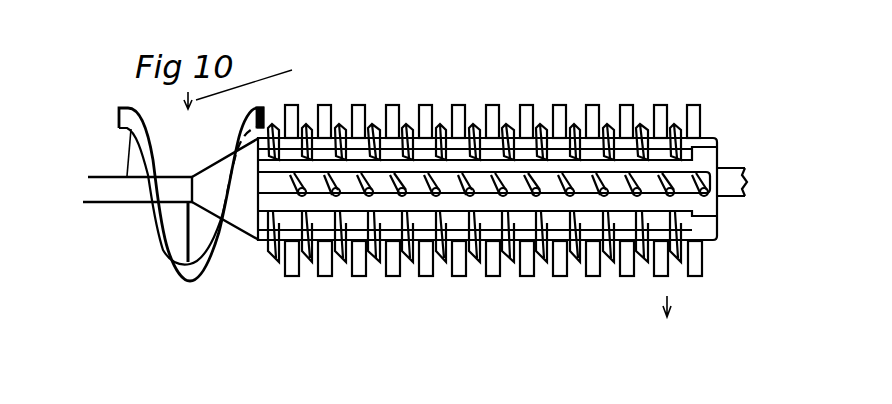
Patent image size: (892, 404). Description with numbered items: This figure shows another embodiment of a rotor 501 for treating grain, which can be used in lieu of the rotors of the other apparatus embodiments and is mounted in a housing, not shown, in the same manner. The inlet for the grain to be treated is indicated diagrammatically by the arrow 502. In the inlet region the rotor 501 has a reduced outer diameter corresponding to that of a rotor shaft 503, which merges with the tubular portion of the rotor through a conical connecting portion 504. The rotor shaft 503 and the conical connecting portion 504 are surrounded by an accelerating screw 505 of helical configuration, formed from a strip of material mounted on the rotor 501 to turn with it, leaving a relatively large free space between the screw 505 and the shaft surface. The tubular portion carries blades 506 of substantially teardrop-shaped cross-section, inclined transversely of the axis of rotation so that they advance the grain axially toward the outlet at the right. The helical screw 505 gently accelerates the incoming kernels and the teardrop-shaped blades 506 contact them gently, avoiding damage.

The rotor 501 is at (395, 205).
The arrow 502 is at (259, 88).
The rotor shaft 503 is at (128, 197).
The conical connecting portion 504 is at (243, 215).
The accelerating screw 505 is at (178, 272).
The blades 506 is at (694, 246).